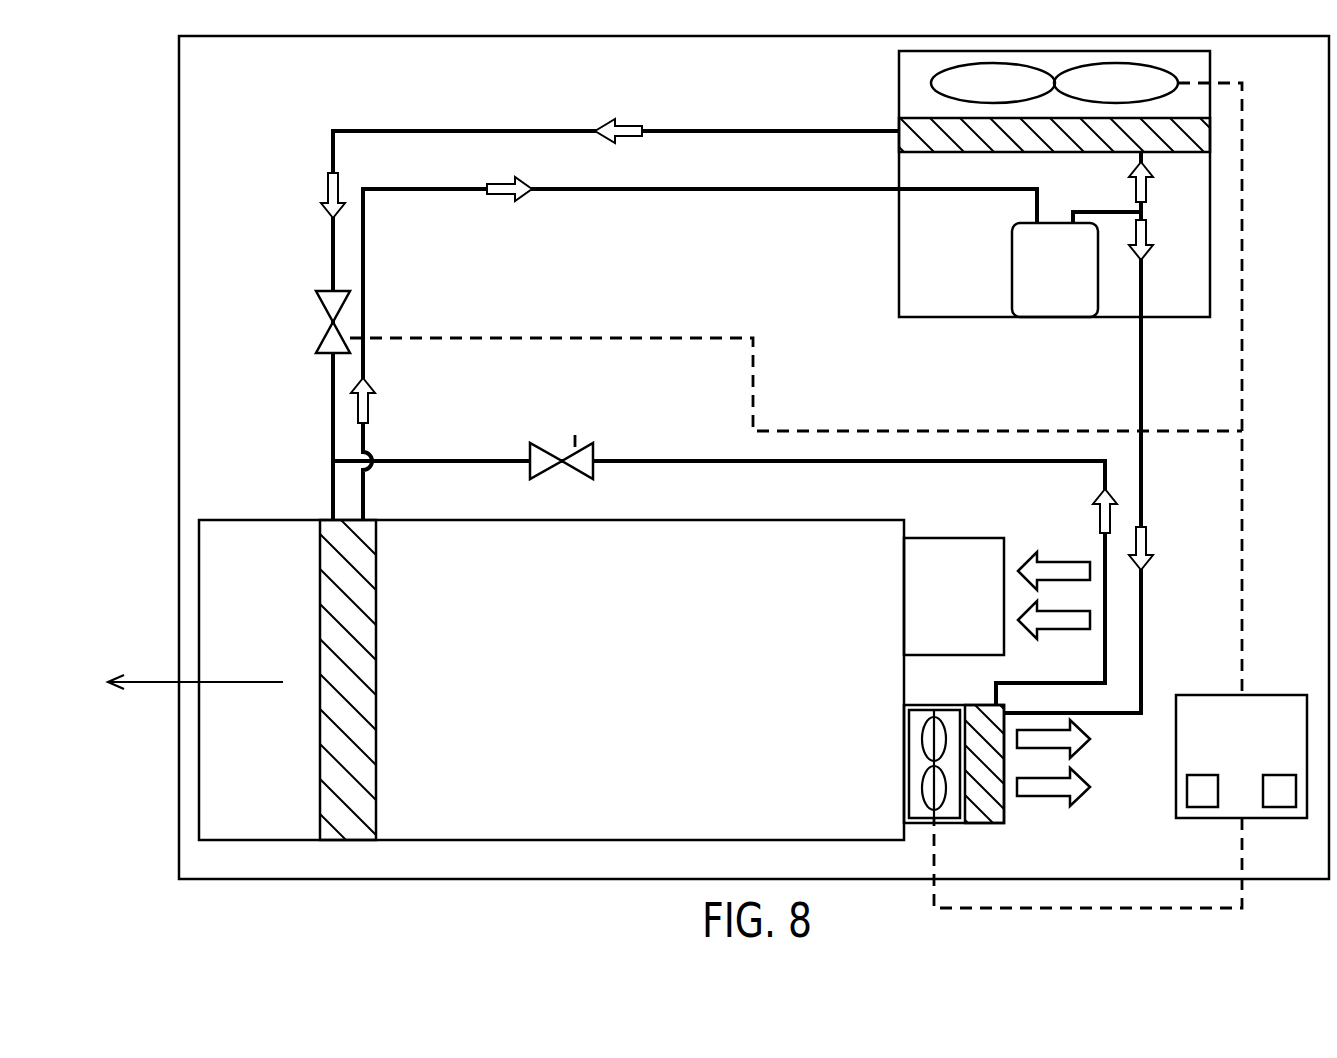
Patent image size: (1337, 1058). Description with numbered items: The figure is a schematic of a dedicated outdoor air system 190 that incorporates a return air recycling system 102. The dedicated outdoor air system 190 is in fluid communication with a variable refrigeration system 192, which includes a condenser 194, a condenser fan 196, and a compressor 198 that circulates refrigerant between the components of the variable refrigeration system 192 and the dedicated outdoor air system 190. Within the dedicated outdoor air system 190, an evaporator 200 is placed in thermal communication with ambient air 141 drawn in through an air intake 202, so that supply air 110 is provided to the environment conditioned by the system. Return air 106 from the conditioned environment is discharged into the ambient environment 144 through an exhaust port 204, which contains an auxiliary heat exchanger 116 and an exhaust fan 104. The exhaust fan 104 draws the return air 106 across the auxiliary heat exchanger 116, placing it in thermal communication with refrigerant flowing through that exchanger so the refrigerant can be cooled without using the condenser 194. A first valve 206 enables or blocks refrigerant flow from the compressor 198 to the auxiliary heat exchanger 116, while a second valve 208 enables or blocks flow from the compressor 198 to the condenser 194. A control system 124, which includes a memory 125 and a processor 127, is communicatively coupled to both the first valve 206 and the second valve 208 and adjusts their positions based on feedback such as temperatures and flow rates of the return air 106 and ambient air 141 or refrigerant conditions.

The return air recycling system 102 is at (962, 829).
The exhaust fan 104 is at (934, 715).
The return air 106 is at (1075, 778).
The supply air 110 is at (223, 682).
The auxiliary heat exchanger 116 is at (983, 705).
The control system 124 is at (1226, 695).
The memory 125 is at (1202, 807).
The processor 127 is at (1280, 807).
The ambient air 141 is at (1032, 562).
The ambient environment 144 is at (1123, 868).
The dedicated outdoor air system 190 is at (278, 410).
The variable refrigeration system 192 is at (880, 251).
The condenser 194 is at (1177, 118).
The condenser fan 196 is at (1163, 68).
The compressor 198 is at (1012, 289).
The evaporator 200 is at (378, 667).
The air intake 202 is at (928, 538).
The exhaust port 204 is at (920, 823).
The first valve 206 is at (556, 443).
The second valve 208 is at (328, 316).